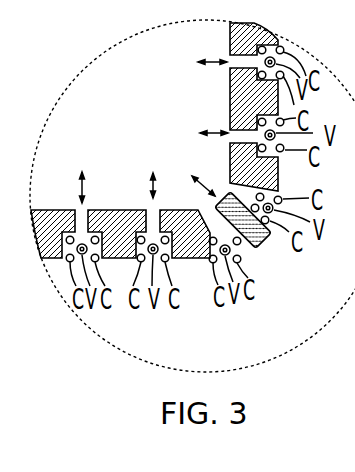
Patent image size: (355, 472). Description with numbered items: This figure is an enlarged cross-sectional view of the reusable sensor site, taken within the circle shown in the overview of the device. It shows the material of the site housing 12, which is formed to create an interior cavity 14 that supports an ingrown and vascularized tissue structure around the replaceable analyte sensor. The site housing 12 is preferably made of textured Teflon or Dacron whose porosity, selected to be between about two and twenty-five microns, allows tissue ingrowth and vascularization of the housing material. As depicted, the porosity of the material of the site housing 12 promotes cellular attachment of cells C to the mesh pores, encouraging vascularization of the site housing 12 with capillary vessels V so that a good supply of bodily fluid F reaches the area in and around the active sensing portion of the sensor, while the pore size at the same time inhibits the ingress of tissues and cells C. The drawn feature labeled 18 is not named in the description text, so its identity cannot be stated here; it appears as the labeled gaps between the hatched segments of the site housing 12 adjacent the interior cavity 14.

The site housing 12 is at (273, 252).
The interior cavity 14 is at (122, 106).
The gap between segments 18 is at (233, 134).